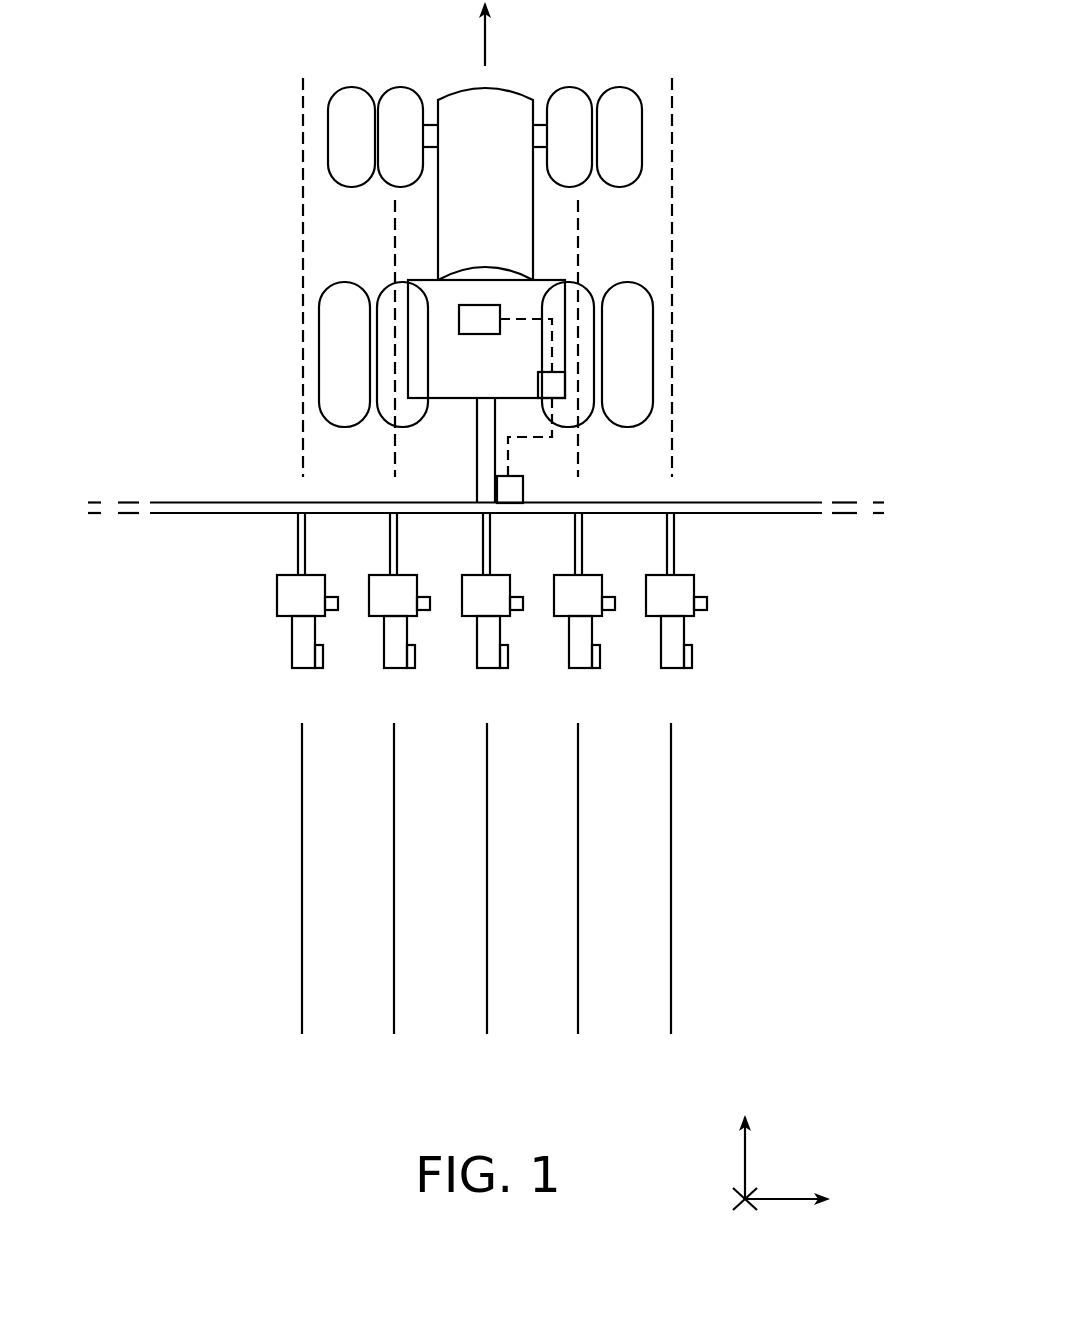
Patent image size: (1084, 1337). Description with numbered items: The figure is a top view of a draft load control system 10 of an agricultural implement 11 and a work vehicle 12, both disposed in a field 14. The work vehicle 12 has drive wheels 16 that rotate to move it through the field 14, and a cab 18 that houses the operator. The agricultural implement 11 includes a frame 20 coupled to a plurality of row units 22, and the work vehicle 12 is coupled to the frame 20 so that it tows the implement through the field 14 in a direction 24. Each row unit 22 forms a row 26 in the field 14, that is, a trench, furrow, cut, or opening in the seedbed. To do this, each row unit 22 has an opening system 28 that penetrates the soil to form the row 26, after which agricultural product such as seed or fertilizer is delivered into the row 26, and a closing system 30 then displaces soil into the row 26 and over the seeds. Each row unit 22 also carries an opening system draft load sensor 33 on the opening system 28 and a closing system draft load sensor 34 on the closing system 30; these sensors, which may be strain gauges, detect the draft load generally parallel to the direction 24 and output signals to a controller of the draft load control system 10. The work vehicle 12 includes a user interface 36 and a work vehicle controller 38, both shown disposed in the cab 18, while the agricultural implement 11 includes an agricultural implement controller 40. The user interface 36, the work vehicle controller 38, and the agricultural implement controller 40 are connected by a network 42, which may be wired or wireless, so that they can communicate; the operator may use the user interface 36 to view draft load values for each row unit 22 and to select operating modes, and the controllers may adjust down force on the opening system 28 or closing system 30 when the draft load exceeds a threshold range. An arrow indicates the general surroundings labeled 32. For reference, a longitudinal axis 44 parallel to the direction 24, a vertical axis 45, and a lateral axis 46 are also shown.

The draft load control system 10 is at (810, 567).
The agricultural implement 11 is at (830, 487).
The work vehicle 12 is at (472, 208).
The field 14 is at (706, 42).
The drive wheels 16 is at (392, 295).
The cab 18 is at (432, 302).
The frame 20 is at (792, 503).
The row units 22 is at (327, 685).
The direction 24 is at (488, 40).
The row 26 is at (302, 1001).
The opening system 28 is at (460, 587).
The closing system 30 is at (485, 668).
The agricultural field 32 is at (818, 382).
The opening system draft load sensor 33 is at (338, 603).
The closing system draft load sensor 34 is at (323, 653).
The user interface 36 is at (500, 312).
The work vehicle controller 38 is at (555, 372).
The agricultural implement controller 40 is at (523, 487).
The network 42 is at (516, 463).
The longitudinal axis 44 is at (745, 1163).
The vertical axis 45 is at (740, 1197).
The lateral axis 46 is at (780, 1199).